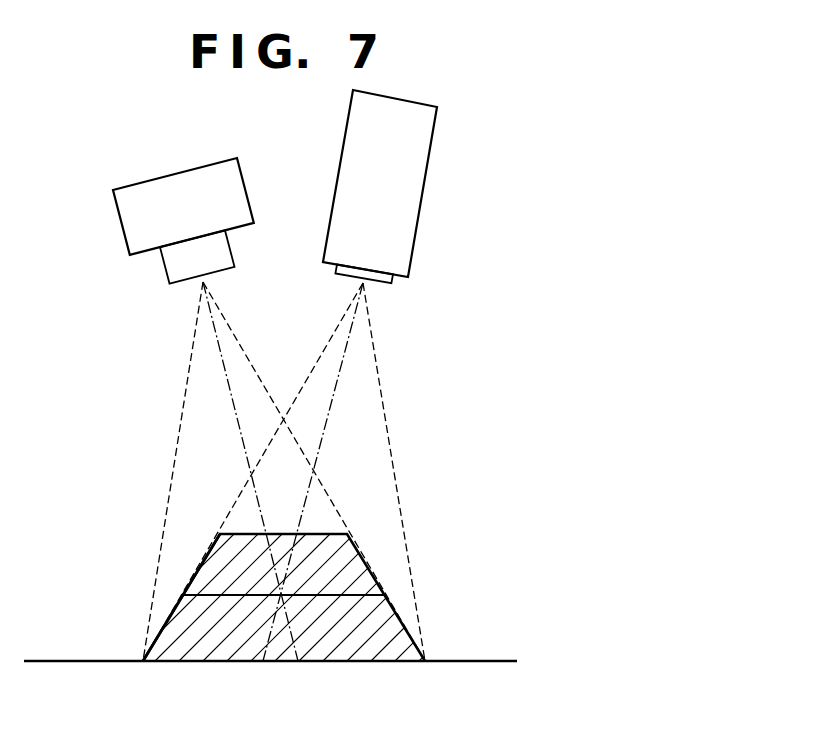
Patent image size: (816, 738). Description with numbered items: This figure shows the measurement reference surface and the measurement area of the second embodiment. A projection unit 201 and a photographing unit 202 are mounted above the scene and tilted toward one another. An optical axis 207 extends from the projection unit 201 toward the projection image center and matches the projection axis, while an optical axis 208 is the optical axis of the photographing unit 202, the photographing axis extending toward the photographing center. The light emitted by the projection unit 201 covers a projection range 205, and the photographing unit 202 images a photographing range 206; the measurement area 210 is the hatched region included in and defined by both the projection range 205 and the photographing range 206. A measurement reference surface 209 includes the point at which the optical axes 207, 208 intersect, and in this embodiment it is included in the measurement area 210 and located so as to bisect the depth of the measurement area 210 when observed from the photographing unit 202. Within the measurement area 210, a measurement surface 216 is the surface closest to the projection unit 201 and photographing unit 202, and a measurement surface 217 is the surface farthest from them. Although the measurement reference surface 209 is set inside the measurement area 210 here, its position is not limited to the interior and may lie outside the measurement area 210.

The projection unit 201 is at (432, 167).
The photographing unit 202 is at (216, 162).
The projection range 205 is at (382, 387).
The photographing range 206 is at (190, 408).
The optical axis 207 is at (318, 448).
The optical axis 208 is at (243, 455).
The measurement reference surface 209 is at (173, 615).
The measurement area 210 is at (377, 650).
The measurement surface 216 is at (210, 553).
The measurement surface 217 is at (203, 661).